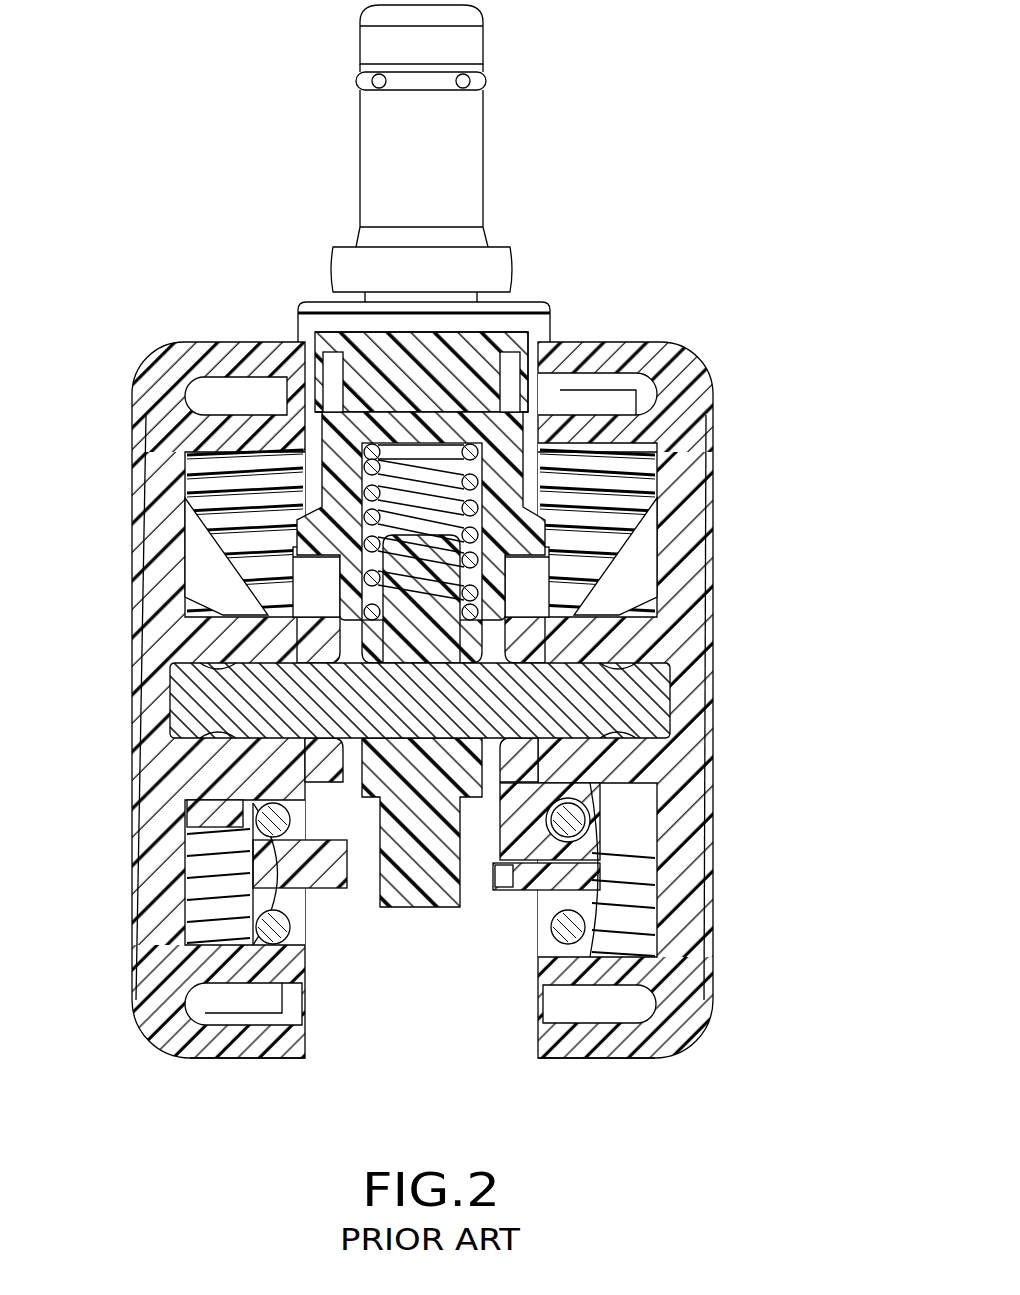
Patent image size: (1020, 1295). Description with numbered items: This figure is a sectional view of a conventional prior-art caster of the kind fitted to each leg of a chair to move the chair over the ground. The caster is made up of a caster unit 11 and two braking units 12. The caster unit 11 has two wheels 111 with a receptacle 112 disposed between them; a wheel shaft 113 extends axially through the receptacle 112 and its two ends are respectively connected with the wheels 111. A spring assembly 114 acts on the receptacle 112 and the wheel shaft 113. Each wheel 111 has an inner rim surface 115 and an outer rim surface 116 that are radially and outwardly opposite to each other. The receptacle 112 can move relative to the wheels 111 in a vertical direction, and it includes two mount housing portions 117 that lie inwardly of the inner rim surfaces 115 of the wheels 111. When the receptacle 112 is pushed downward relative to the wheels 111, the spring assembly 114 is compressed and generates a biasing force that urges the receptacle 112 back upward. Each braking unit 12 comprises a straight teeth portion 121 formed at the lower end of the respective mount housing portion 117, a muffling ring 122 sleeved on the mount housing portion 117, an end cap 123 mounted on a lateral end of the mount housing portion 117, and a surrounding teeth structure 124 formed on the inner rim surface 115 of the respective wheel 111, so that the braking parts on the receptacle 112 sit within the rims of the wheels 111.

The caster unit 11 is at (222, 312).
The wheel 111 is at (160, 506).
The receptacle 112 is at (430, 382).
The wheel shaft 113 is at (668, 683).
The spring assembly 114 is at (437, 507).
The inner rim surface 115 is at (232, 950).
The outer rim surface 116 is at (255, 1060).
The mount housing portion 117 is at (350, 840).
The braking unit 12 is at (527, 947).
The straight teeth portion 121 is at (607, 898).
The muffling ring 122 is at (585, 815).
The end cap 123 is at (563, 873).
The surrounding teeth structure 124 is at (640, 945).